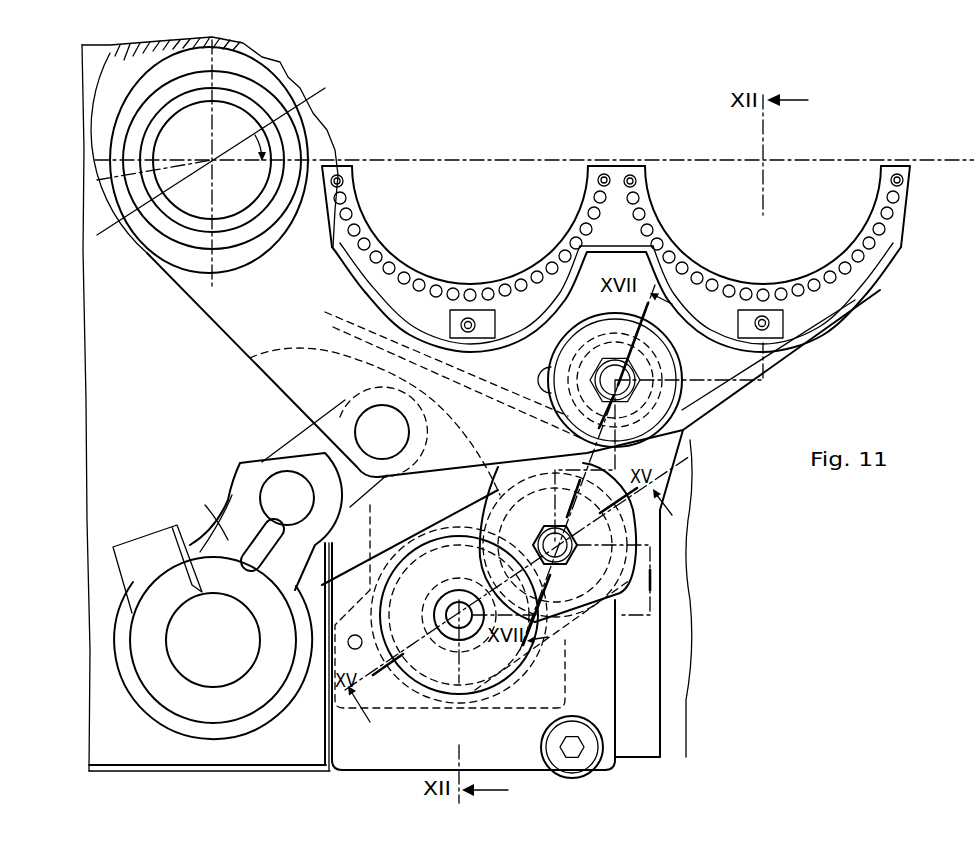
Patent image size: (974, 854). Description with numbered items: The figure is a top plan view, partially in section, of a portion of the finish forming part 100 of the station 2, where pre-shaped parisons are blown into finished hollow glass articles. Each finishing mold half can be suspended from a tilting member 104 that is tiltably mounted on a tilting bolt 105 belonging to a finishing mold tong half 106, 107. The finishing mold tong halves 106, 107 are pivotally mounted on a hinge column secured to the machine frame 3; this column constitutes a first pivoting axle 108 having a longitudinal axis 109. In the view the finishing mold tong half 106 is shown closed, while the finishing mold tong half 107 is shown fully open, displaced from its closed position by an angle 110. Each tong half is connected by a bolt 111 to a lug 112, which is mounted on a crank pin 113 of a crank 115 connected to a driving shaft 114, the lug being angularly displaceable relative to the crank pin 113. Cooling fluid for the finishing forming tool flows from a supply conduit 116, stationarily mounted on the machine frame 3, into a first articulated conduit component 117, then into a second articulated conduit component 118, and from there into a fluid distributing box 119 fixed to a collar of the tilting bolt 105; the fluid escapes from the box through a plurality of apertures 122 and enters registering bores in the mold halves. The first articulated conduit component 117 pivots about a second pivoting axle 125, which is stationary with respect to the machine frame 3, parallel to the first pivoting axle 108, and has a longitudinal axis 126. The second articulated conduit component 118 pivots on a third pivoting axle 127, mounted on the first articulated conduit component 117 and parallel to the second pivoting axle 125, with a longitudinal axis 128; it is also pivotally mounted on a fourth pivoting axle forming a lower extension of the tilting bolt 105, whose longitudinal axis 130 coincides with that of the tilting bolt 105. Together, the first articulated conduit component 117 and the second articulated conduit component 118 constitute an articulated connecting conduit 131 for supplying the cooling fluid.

The station 2 is at (203, 781).
The machine frame 3 is at (328, 768).
The finish forming part 100 is at (300, 778).
The tilting member 104 is at (622, 163).
The tilting bolt 105 is at (694, 428).
The finishing mold tong half 106 is at (200, 308).
The finishing mold tong half 107 is at (108, 84).
The first pivoting axle 108 is at (97, 235).
The longitudinal axis 109 is at (97, 180).
The angle 110 is at (256, 152).
The bolt 111 is at (386, 442).
The lug 112 is at (297, 436).
The crank pin 113 is at (285, 480).
The driving shaft 114 is at (193, 672).
The crank 115 is at (222, 520).
The supply conduit 116 is at (438, 660).
The first articulated conduit component 117 is at (578, 628).
The second articulated conduit component 118 is at (680, 468).
The fluid distributing box 119 is at (538, 250).
The apertures 122 is at (407, 273).
The second pivoting axle 125 is at (445, 605).
The longitudinal axis 126 is at (456, 625).
The third pivoting axle 127 is at (497, 498).
The longitudinal axis 128 is at (470, 511).
The longitudinal axis 130 is at (549, 359).
The articulated connecting conduit 131 is at (618, 620).